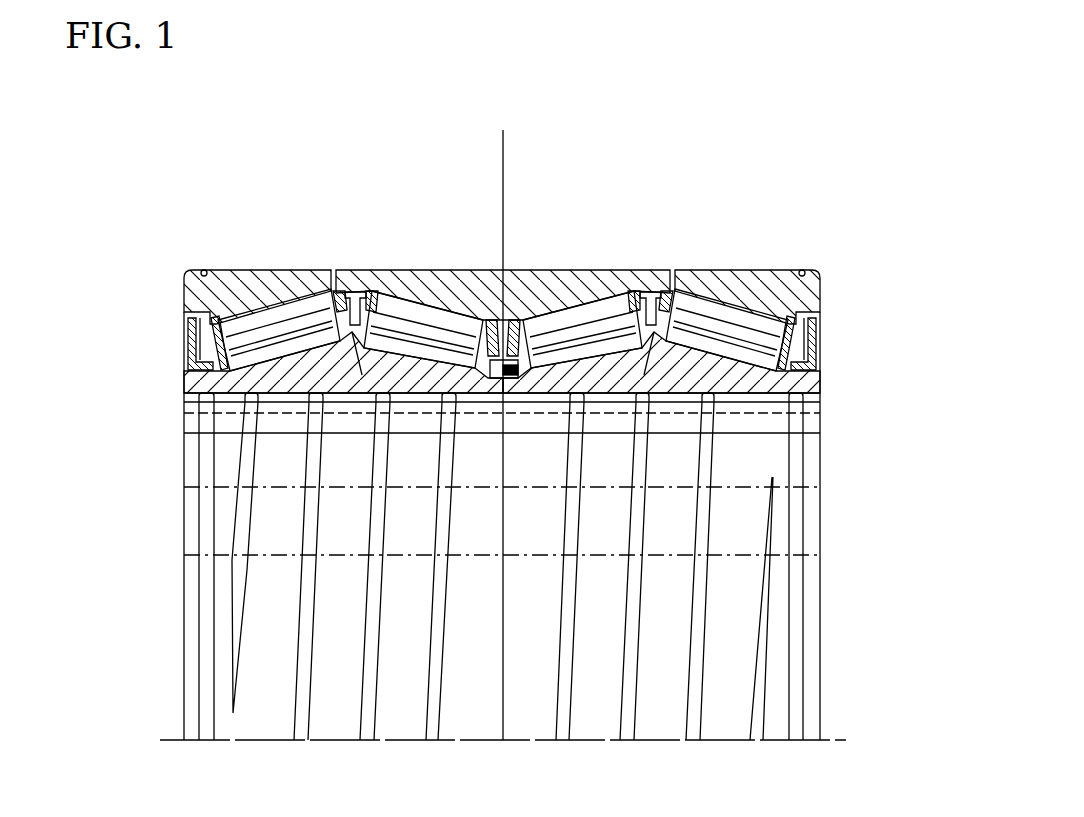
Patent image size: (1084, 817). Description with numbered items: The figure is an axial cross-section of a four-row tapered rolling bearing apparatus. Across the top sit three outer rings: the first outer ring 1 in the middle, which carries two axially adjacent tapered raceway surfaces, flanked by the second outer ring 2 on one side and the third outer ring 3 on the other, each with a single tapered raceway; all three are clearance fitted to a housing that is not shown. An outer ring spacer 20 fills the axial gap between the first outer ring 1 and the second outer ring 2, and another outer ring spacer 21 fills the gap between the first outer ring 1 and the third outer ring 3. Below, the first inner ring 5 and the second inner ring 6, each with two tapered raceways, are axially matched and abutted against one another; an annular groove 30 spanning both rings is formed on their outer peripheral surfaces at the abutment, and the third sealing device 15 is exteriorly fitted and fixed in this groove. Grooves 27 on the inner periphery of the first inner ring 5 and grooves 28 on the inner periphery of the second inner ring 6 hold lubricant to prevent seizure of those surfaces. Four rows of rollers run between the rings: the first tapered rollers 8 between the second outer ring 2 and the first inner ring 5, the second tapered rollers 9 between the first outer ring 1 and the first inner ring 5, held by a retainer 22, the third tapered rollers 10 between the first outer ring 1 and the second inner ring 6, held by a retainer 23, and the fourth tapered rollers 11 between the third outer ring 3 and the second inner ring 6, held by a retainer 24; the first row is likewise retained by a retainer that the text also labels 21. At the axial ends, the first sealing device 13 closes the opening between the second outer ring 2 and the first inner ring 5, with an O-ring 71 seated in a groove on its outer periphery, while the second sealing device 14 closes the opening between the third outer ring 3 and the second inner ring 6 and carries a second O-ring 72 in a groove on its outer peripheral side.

The first outer ring 1 is at (520, 270).
The second outer ring 2 is at (256, 290).
The third outer ring 3 is at (735, 288).
The first inner ring 5 is at (355, 375).
The second inner ring 6 is at (674, 365).
The first tapered rollers 8 is at (304, 300).
The second tapered rollers 9 is at (440, 316).
The third tapered rollers 10 is at (598, 318).
The fourth tapered rollers 11 is at (770, 320).
The first sealing device 13 is at (184, 300).
The second sealing device 14 is at (820, 300).
The third sealing device 15 is at (508, 380).
The outer ring spacer 20 is at (364, 294).
The outer ring spacer 21 is at (340, 291).
The retainer 22 is at (362, 373).
The retainer 23 is at (638, 290).
The retainer 24 is at (660, 330).
The grooves 27 is at (303, 638).
The grooves 28 is at (700, 650).
The annular groove 30 is at (509, 422).
The O-ring 71 is at (204, 270).
The second O-ring 72 is at (806, 272).